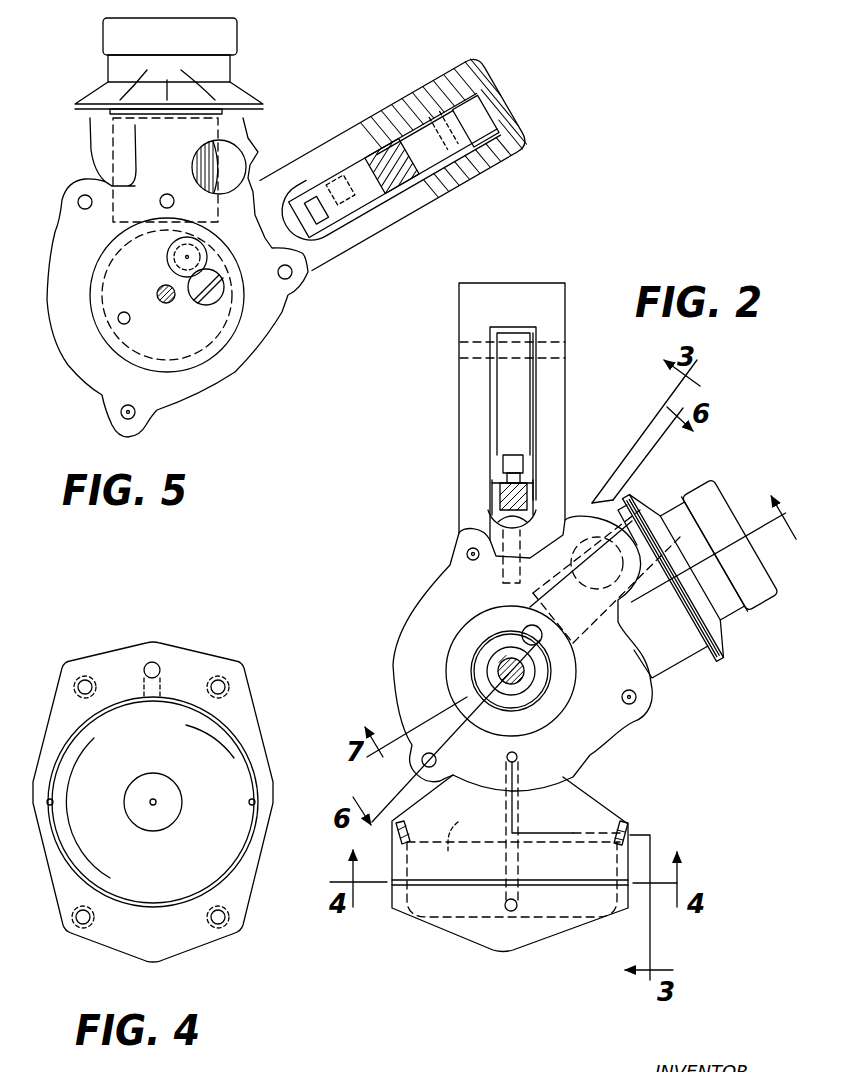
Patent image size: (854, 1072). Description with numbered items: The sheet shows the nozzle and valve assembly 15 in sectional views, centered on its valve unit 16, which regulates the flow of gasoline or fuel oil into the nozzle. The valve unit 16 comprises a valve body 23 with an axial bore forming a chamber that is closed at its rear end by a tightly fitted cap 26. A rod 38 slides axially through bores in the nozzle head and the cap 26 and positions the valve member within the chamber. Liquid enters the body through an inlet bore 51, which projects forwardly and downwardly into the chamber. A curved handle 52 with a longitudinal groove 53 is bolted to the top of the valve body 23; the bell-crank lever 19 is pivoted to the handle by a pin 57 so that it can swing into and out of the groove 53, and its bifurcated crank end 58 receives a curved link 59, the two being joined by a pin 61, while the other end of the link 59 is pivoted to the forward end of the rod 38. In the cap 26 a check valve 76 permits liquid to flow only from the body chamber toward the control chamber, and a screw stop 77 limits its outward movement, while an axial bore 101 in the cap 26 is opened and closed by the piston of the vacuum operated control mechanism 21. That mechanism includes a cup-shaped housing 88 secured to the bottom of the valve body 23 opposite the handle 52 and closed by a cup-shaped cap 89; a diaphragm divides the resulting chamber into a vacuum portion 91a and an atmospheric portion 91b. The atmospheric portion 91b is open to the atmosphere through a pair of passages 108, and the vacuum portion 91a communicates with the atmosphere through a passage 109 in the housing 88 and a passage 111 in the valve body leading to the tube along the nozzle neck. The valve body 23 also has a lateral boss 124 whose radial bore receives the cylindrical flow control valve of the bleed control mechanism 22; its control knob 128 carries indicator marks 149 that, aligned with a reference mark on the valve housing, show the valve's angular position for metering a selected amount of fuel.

In FIG. 2, the nozzle and valve assembly 15 is at (510, 653).
In FIG. 2, the valve unit 16 is at (413, 663).
In FIG. 5, the lever 19 is at (407, 172).
In FIG. 2, the lever 19 is at (518, 388).
In FIG. 2, the vacuum operated control mechanism 21 is at (529, 865).
In FIG. 5, the control mechanism 22 is at (82, 82).
In FIG. 2, the control mechanism 22 is at (730, 626).
In FIG. 5, the valve body 23 is at (238, 364).
In FIG. 2, the valve body 23 is at (590, 734).
In FIG. 5, the cap 26 is at (178, 346).
In FIG. 5, the rod 38 is at (161, 288).
In FIG. 2, the rod 38 is at (506, 658).
In FIG. 5, the inlet bore 51 is at (236, 163).
In FIG. 5, the curved handle 52 is at (527, 143).
In FIG. 2, the curved handle 52 is at (460, 420).
In FIG. 5, the longitudinal groove 53 is at (477, 112).
In FIG. 2, the longitudinal groove 53 is at (503, 328).
In FIG. 5, the pin 57 is at (490, 165).
In FIG. 2, the pin 57 is at (478, 340).
In FIG. 5, the crank end 58 is at (325, 220).
In FIG. 2, the crank end 58 is at (525, 462).
In FIG. 2, the curved link 59 is at (495, 500).
In FIG. 2, the pin 61 is at (500, 477).
In FIG. 5, the check valve 76 is at (204, 246).
In FIG. 5, the screw stop 77 is at (222, 282).
In FIG. 2, the cup-shaped housing 88 is at (598, 811).
In FIG. 4, the cup-shaped housing 88 is at (195, 670).
In FIG. 2, the cup-shaped cap 89 is at (498, 938).
In FIG. 2, the vacuum portion 91a is at (537, 910).
In FIG. 2, the atmospheric portion 91b is at (466, 831).
In FIG. 4, the atmospheric portion 91b is at (165, 870).
In FIG. 5, the axial bore 101 is at (133, 296).
In FIG. 2, the passages 108 is at (408, 826).
In FIG. 4, the passages 108 is at (52, 802).
In FIG. 2, the passage 109 is at (520, 811).
In FIG. 2, the passage 111 is at (518, 755).
In FIG. 2, the lateral boss 124 is at (673, 662).
In FIG. 5, the control knob 128 is at (235, 32).
In FIG. 5, the indicator marks 149 is at (167, 80).